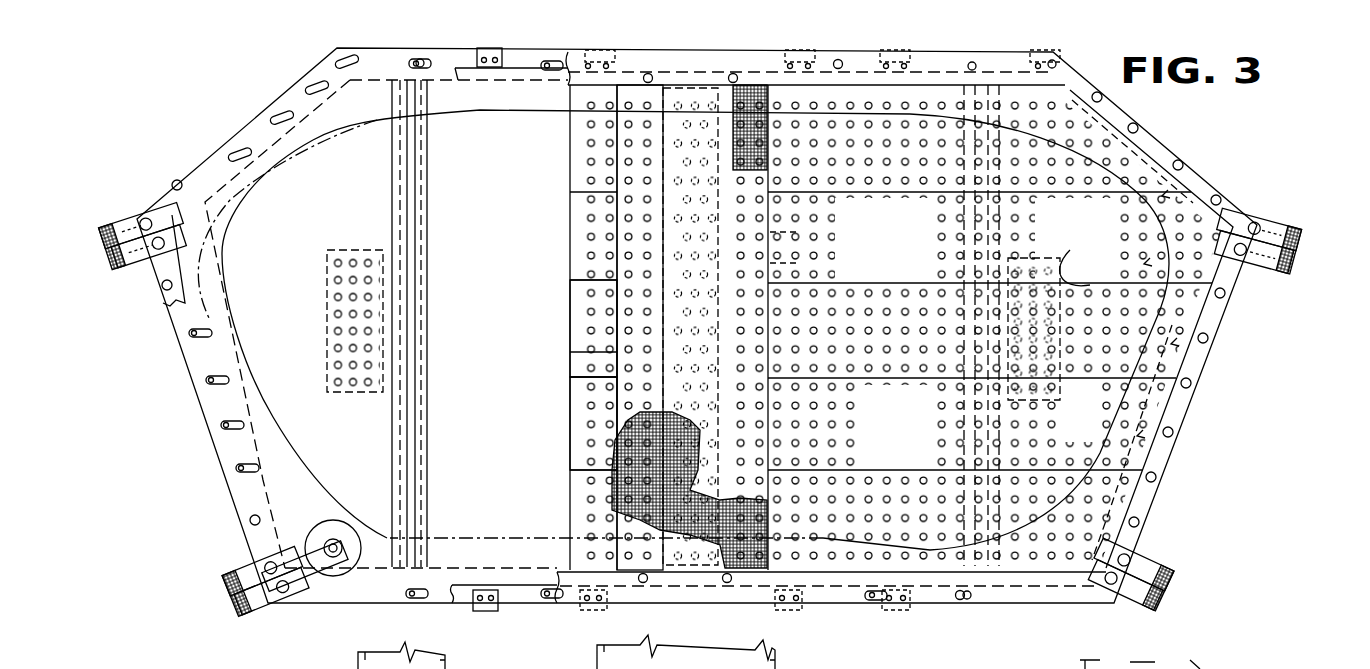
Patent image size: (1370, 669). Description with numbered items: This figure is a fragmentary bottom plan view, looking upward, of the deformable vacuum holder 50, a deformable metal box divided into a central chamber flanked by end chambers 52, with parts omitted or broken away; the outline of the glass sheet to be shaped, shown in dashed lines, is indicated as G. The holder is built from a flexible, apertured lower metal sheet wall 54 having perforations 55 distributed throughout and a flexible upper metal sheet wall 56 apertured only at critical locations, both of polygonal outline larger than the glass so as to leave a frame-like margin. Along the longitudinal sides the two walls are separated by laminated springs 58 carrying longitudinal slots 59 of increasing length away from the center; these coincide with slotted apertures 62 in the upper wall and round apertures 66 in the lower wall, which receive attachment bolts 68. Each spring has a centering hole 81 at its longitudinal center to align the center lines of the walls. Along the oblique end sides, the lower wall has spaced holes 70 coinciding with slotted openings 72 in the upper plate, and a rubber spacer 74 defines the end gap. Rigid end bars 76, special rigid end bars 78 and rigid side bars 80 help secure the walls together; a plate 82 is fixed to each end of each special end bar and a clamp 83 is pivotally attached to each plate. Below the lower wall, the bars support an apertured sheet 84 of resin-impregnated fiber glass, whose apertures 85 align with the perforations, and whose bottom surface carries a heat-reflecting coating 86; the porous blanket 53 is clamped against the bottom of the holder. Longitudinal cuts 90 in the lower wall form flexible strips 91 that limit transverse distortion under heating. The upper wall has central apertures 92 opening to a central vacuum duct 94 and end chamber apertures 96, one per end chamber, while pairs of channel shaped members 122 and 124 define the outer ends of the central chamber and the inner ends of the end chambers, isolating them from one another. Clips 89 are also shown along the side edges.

The vacuum holder 50 is at (200, 452).
The end chambers 52 is at (237, 105).
The blanket 53 is at (607, 497).
The lower metal sheet wall 54 is at (572, 336).
The perforations 55 is at (590, 350).
The upper metal sheet wall 56 is at (471, 258).
The laminated springs 58 is at (516, 68).
The longitudinal slots 59 is at (553, 63).
The slotted apertures 62 is at (424, 58).
The round apertures 66 is at (840, 60).
The attachment bolts 68 is at (418, 60).
The spaced holes 70 is at (1190, 165).
The slotted openings 72 is at (222, 378).
The rubber spacer 74 is at (1210, 180).
The rigid end bars 76 is at (190, 175).
The special rigid end bars 78 is at (172, 302).
The rigid side bars 80 is at (752, 65).
The centering hole 81 is at (690, 82).
The plate 82 is at (122, 268).
The clamp 83 is at (145, 232).
The apertured sheet 84 is at (625, 228).
The apertures 85 is at (625, 243).
The heat-reflecting coating 86 is at (620, 437).
The clip 89 is at (490, 48).
The longitudinal cuts 90 is at (590, 385).
The flexible strips 91 is at (996, 332).
The central apertures 92 is at (800, 263).
The central vacuum duct 94 is at (800, 232).
The end chamber apertures 96 is at (338, 297).
The channel shaped members 122 is at (425, 215).
The channel shaped members 124 is at (395, 213).
The ground contour G is at (378, 118).